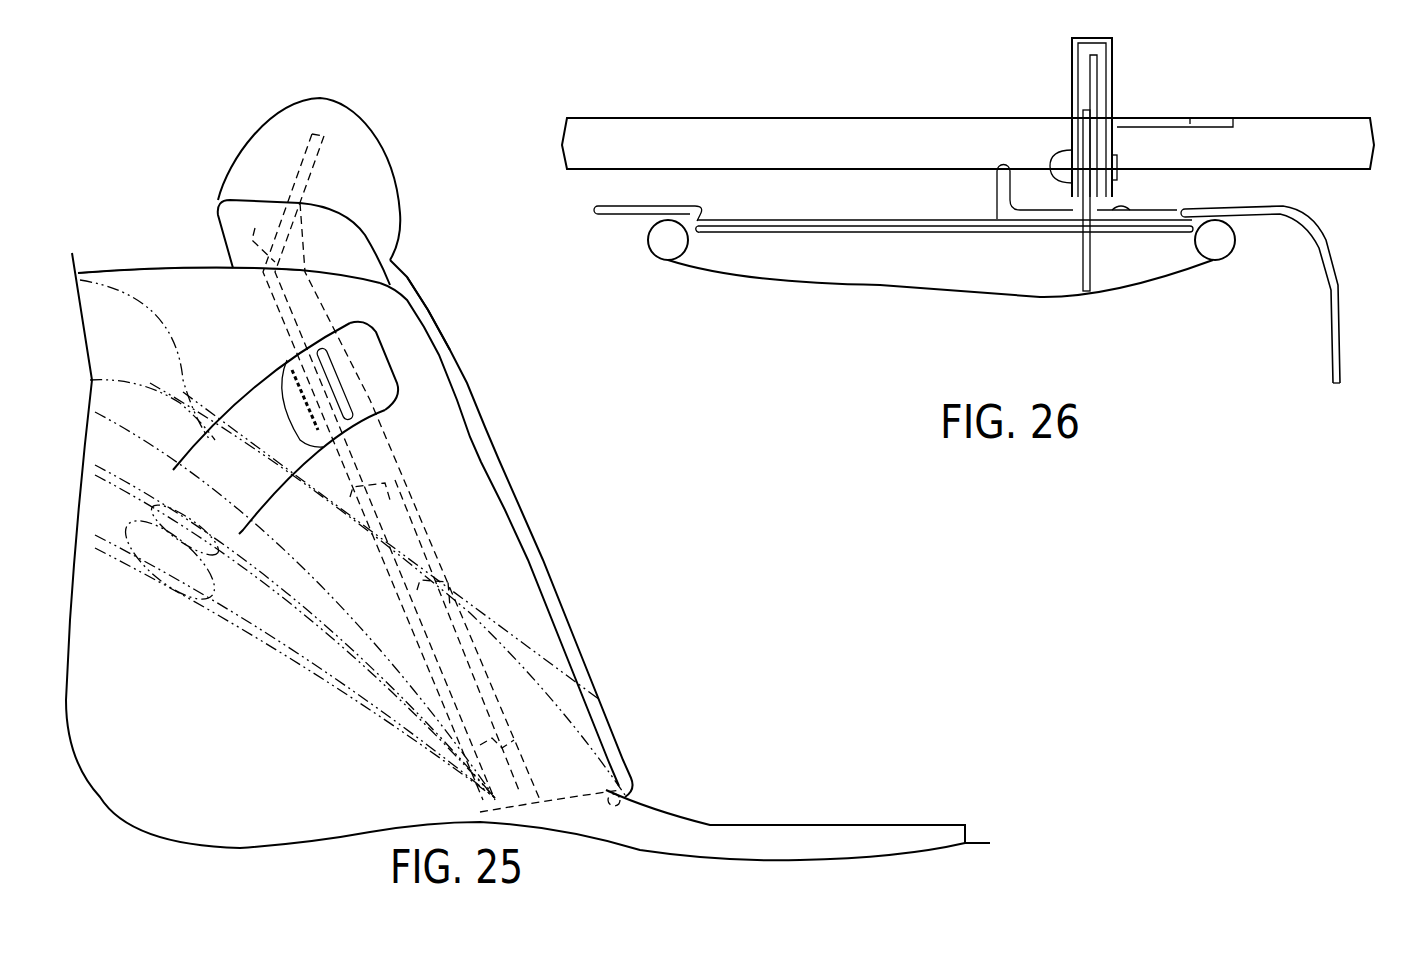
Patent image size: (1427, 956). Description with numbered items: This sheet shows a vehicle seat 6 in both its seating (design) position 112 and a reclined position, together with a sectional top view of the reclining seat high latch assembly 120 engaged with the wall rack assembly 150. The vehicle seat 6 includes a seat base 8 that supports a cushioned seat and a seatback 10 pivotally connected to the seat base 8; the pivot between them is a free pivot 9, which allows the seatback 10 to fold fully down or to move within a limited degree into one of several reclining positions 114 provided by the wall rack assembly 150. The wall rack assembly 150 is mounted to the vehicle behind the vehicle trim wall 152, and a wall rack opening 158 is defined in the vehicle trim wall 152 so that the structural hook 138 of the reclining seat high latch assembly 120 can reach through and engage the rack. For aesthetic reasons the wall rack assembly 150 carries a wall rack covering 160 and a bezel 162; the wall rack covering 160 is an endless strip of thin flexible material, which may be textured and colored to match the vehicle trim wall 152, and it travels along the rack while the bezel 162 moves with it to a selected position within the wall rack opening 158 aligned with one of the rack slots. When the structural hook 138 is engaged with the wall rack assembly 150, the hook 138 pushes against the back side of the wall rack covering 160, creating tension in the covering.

In FIG. 25, the vehicle seat 6 is at (413, 190).
In FIG. 26, the vehicle seat 6 is at (1220, 110).
In FIG. 25, the seat base 8 is at (843, 810).
In FIG. 25, the free pivot 9 is at (630, 797).
In FIG. 25, the seatback 10 is at (452, 367).
In FIG. 25, the seating (design) position 112 is at (427, 270).
In FIG. 25, the reclining positions 114 is at (300, 678).
In FIG. 26, the reclining seat high latch assembly 120 is at (1132, 93).
In FIG. 26, the structural hook 138 is at (1093, 270).
In FIG. 25, the wall rack assembly 150 is at (193, 618).
In FIG. 26, the wall rack assembly 150 is at (952, 240).
In FIG. 25, the vehicle trim wall 152 is at (173, 277).
In FIG. 26, the vehicle trim wall 152 is at (1316, 218).
In FIG. 25, the wall rack opening 158 is at (253, 390).
In FIG. 26, the wall rack opening 158 is at (750, 205).
In FIG. 25, the wall rack covering 160 is at (295, 463).
In FIG. 26, the wall rack covering 160 is at (850, 283).
In FIG. 25, the bezel 162 is at (373, 403).
In FIG. 26, the bezel 162 is at (993, 185).